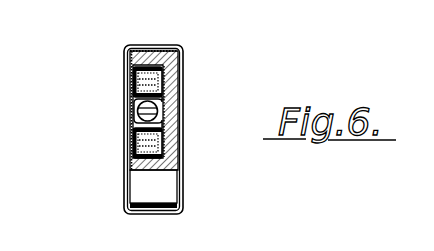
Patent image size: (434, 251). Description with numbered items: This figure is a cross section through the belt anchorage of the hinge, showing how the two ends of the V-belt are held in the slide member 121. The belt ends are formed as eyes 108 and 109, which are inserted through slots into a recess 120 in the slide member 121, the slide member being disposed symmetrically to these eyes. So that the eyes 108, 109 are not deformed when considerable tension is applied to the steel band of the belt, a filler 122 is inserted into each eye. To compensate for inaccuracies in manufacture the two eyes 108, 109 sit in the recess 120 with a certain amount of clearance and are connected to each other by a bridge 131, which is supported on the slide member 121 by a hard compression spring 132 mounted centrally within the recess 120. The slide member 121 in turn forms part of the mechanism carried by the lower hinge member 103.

The lower hinge member 103 is at (181, 170).
The eye 108 is at (149, 48).
The eye 109 is at (150, 160).
The recess 120 is at (134, 70).
The slide member 121 is at (172, 90).
The filler 122 is at (140, 88).
The bridge 131 is at (138, 110).
The compression spring 132 is at (168, 111).